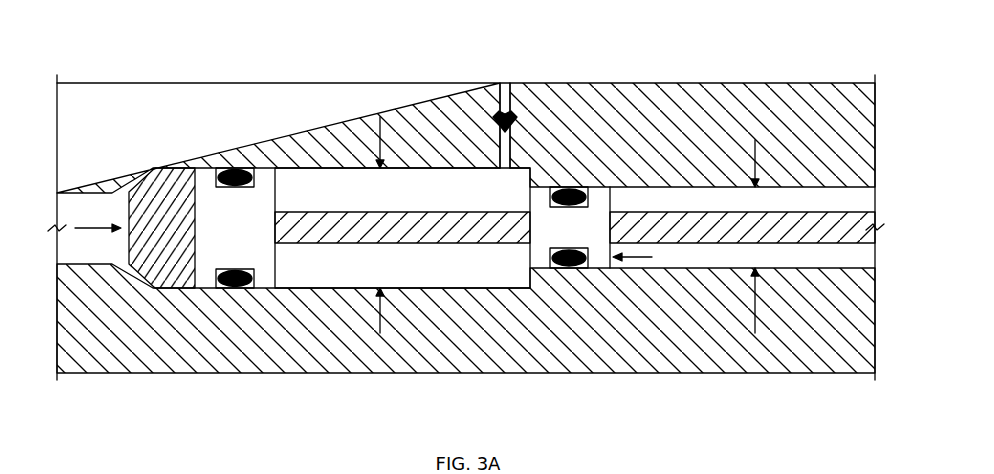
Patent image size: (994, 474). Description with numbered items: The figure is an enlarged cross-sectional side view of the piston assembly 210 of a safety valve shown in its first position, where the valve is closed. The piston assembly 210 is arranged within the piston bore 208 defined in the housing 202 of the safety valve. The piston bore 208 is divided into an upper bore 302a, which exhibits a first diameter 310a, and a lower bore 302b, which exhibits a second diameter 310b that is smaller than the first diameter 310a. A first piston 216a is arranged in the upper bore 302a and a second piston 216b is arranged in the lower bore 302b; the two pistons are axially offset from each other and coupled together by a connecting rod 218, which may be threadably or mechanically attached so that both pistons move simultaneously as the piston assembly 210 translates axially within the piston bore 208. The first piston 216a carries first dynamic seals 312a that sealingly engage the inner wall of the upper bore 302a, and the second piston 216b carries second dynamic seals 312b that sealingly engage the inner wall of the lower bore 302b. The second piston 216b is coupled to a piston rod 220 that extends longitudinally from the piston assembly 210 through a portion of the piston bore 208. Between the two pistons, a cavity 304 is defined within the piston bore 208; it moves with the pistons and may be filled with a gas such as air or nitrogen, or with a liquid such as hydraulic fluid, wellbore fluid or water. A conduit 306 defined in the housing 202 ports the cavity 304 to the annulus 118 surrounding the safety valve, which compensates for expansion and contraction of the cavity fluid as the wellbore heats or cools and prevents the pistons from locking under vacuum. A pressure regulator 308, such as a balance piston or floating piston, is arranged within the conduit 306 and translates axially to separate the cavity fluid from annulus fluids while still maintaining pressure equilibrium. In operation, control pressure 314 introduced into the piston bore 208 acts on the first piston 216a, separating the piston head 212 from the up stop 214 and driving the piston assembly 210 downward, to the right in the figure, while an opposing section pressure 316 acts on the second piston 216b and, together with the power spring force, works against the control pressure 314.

The annulus 118 is at (632, 68).
The housing 202 is at (688, 96).
The piston bore 208 is at (108, 188).
The piston assembly 210 is at (337, 70).
The piston head 212 is at (184, 178).
The up stop 214 is at (148, 185).
The first piston 216a is at (263, 260).
The second piston 216b is at (603, 195).
The connecting rod 218 is at (432, 240).
The piston rod 220 is at (860, 222).
The upper bore 302a is at (450, 172).
The lower bore 302b is at (836, 190).
The cavity 304 is at (396, 206).
The conduit 306 is at (510, 168).
The pressure regulator 308 is at (507, 112).
The first diameter 310a is at (380, 117).
The second diameter 310b is at (755, 140).
The first dynamic seals 312a is at (238, 168).
The second dynamic seals 312b is at (568, 187).
The control pressure 314 is at (78, 230).
The section pressure 316 is at (652, 257).